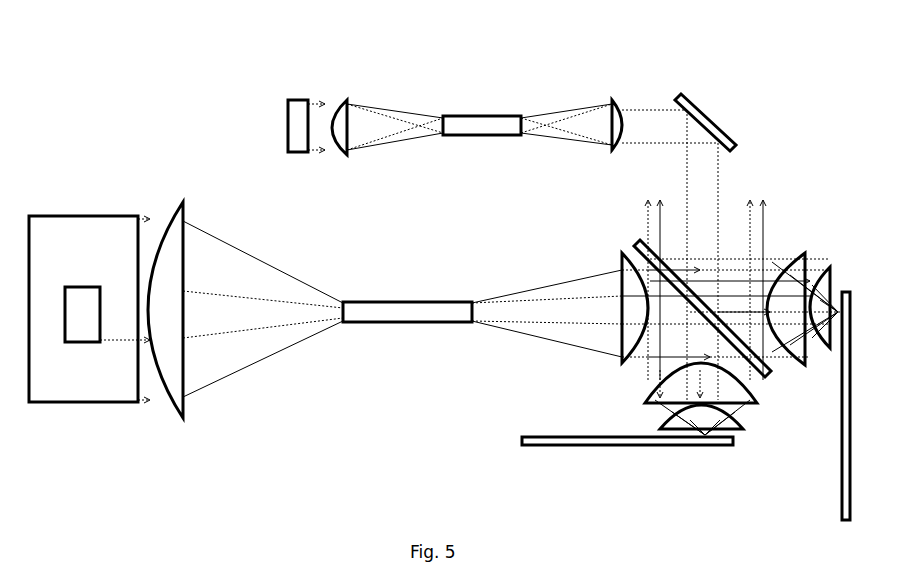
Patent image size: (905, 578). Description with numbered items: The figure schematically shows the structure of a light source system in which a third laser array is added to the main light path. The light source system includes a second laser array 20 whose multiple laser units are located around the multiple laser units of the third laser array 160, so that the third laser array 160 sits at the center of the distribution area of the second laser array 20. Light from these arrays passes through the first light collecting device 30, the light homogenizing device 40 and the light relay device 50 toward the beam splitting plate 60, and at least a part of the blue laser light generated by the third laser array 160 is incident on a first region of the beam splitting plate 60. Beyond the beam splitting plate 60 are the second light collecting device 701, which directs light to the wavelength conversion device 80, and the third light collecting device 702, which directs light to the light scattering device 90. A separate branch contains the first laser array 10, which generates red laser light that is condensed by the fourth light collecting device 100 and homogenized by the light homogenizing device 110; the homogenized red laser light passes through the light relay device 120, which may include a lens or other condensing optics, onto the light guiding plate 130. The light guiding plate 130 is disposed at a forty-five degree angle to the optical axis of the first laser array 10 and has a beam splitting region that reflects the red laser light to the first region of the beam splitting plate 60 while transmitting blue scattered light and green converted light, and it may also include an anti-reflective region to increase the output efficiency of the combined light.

The first laser array 10 is at (290, 98).
The fourth light collecting device 100 is at (337, 98).
The light homogenizing device 110 is at (462, 115).
The light relay device 120 is at (612, 98).
The light guiding plate 130 is at (718, 100).
The second laser array 20 is at (100, 240).
The third laser array 160 is at (78, 330).
The first light collecting device 30 is at (183, 205).
The light homogenizing device 40 is at (375, 302).
The light relay device 50 is at (622, 262).
The beam splitting plate 60 is at (637, 242).
The second light collecting device 701 is at (810, 372).
The third light collecting device 702 is at (757, 403).
The wavelength conversion device 80 is at (842, 505).
The light scattering device 90 is at (588, 435).